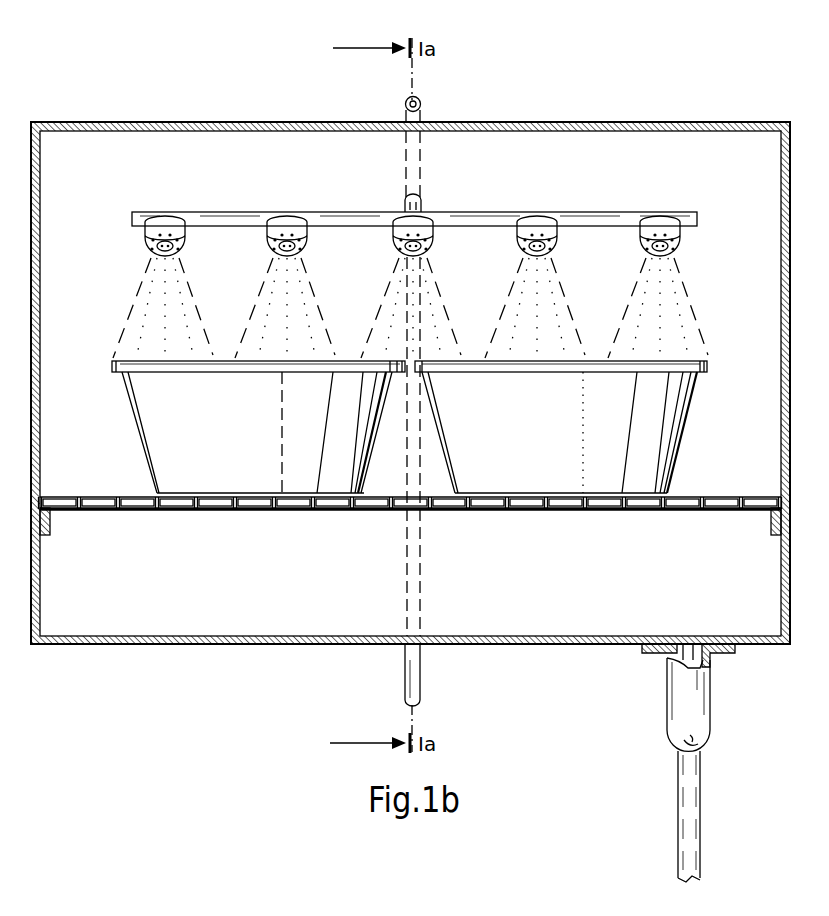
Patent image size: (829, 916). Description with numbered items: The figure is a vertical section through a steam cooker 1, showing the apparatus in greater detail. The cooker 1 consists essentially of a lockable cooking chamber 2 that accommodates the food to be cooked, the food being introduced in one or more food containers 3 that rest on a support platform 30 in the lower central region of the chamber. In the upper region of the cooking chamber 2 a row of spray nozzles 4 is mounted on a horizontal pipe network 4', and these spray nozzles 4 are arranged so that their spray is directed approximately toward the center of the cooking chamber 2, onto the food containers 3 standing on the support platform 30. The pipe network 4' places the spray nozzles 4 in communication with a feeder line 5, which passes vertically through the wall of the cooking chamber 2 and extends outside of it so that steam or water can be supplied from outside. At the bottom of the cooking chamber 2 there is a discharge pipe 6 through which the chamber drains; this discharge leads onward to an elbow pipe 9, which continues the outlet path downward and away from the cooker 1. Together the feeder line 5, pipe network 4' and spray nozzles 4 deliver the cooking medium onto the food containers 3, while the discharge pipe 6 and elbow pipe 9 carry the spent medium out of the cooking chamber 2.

The cooker 1 is at (686, 104).
The cooking chamber 2 is at (738, 304).
The food container 3 is at (262, 441).
The spray nozzle 4 is at (410, 287).
The pipe network 4' is at (414, 232).
The feeder line 5 is at (421, 107).
The discharge pipe 6 is at (674, 699).
The elbow pipe 9 is at (687, 853).
The support platform 30 is at (722, 496).